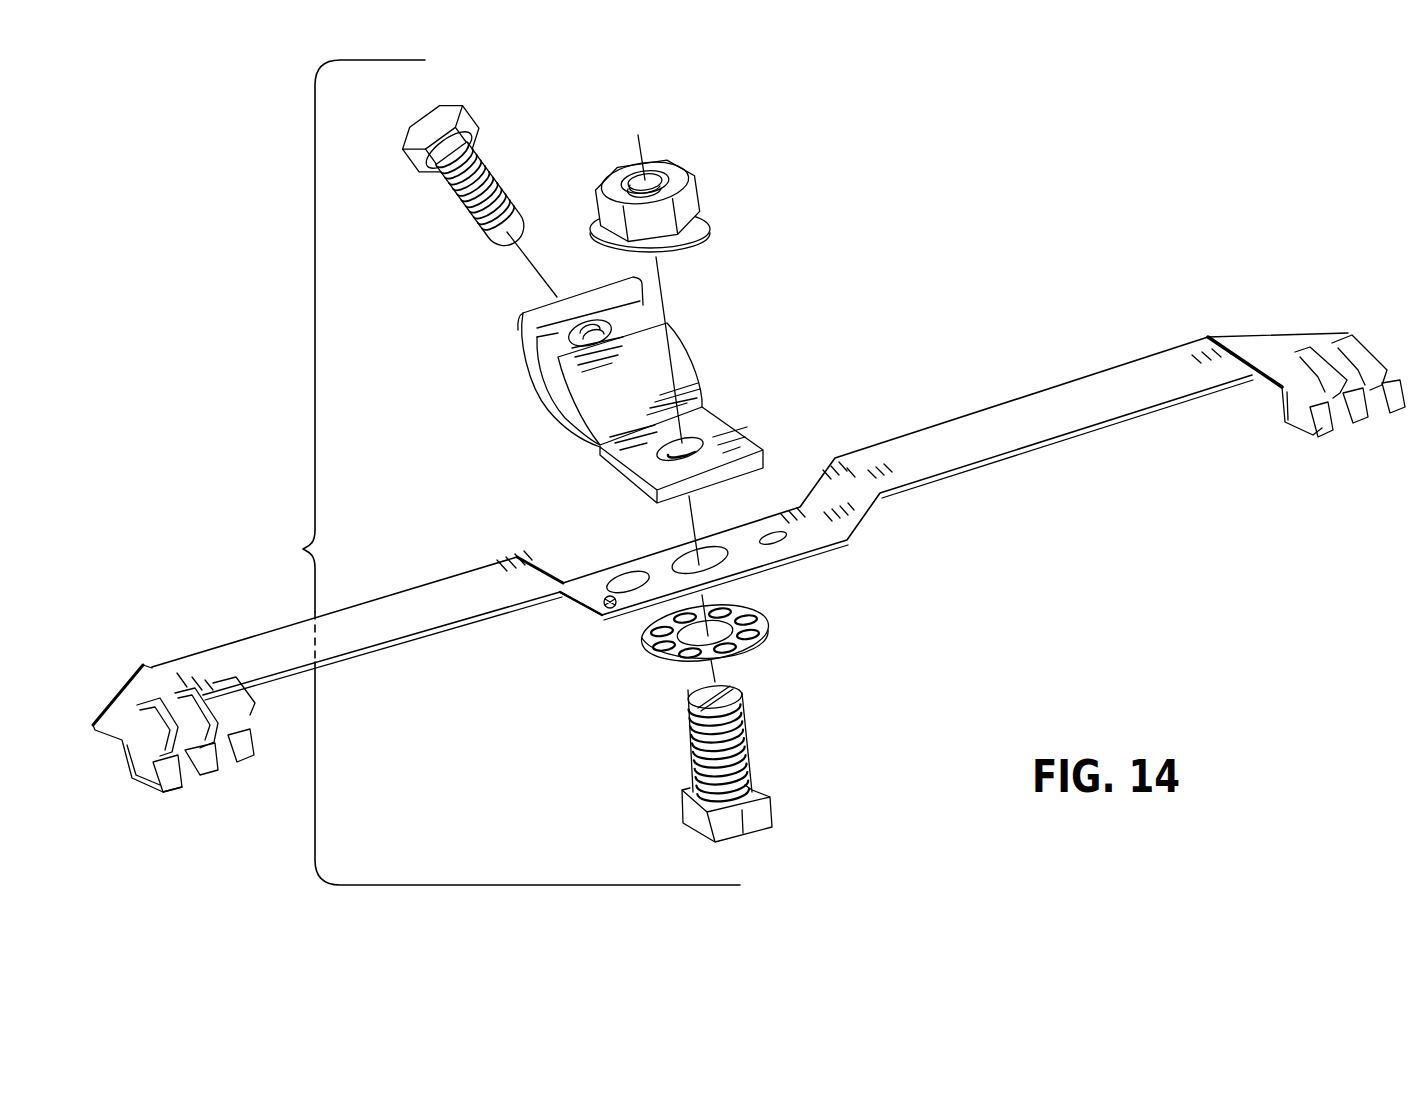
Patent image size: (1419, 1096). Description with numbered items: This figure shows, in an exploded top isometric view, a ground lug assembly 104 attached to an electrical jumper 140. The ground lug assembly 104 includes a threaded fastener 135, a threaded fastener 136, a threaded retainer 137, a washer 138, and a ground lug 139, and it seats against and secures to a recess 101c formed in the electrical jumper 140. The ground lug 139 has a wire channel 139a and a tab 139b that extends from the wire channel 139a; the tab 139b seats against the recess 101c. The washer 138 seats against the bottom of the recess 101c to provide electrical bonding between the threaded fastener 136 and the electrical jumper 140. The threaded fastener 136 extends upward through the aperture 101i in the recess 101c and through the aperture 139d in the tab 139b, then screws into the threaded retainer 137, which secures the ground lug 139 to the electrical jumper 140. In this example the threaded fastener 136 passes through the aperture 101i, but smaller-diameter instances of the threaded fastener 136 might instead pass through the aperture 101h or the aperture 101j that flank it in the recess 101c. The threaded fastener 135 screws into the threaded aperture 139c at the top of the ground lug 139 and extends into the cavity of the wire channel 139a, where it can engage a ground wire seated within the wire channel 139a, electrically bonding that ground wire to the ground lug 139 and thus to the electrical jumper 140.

The ground lug assembly 104 is at (492, 472).
The electrical jumper 140 is at (1153, 345).
The recess 101c is at (575, 578).
The aperture 101h is at (635, 588).
The aperture 101i is at (715, 547).
The aperture 101j is at (784, 543).
The threaded fastener 135 is at (490, 160).
The threaded retainer 137 is at (700, 180).
The ground lug 139 is at (630, 387).
The wire channel 139a is at (543, 385).
The tab 139b is at (710, 453).
The threaded aperture 139c is at (577, 335).
The aperture 139d is at (668, 458).
The washer 138 is at (770, 624).
The threaded fastener 136 is at (750, 738).